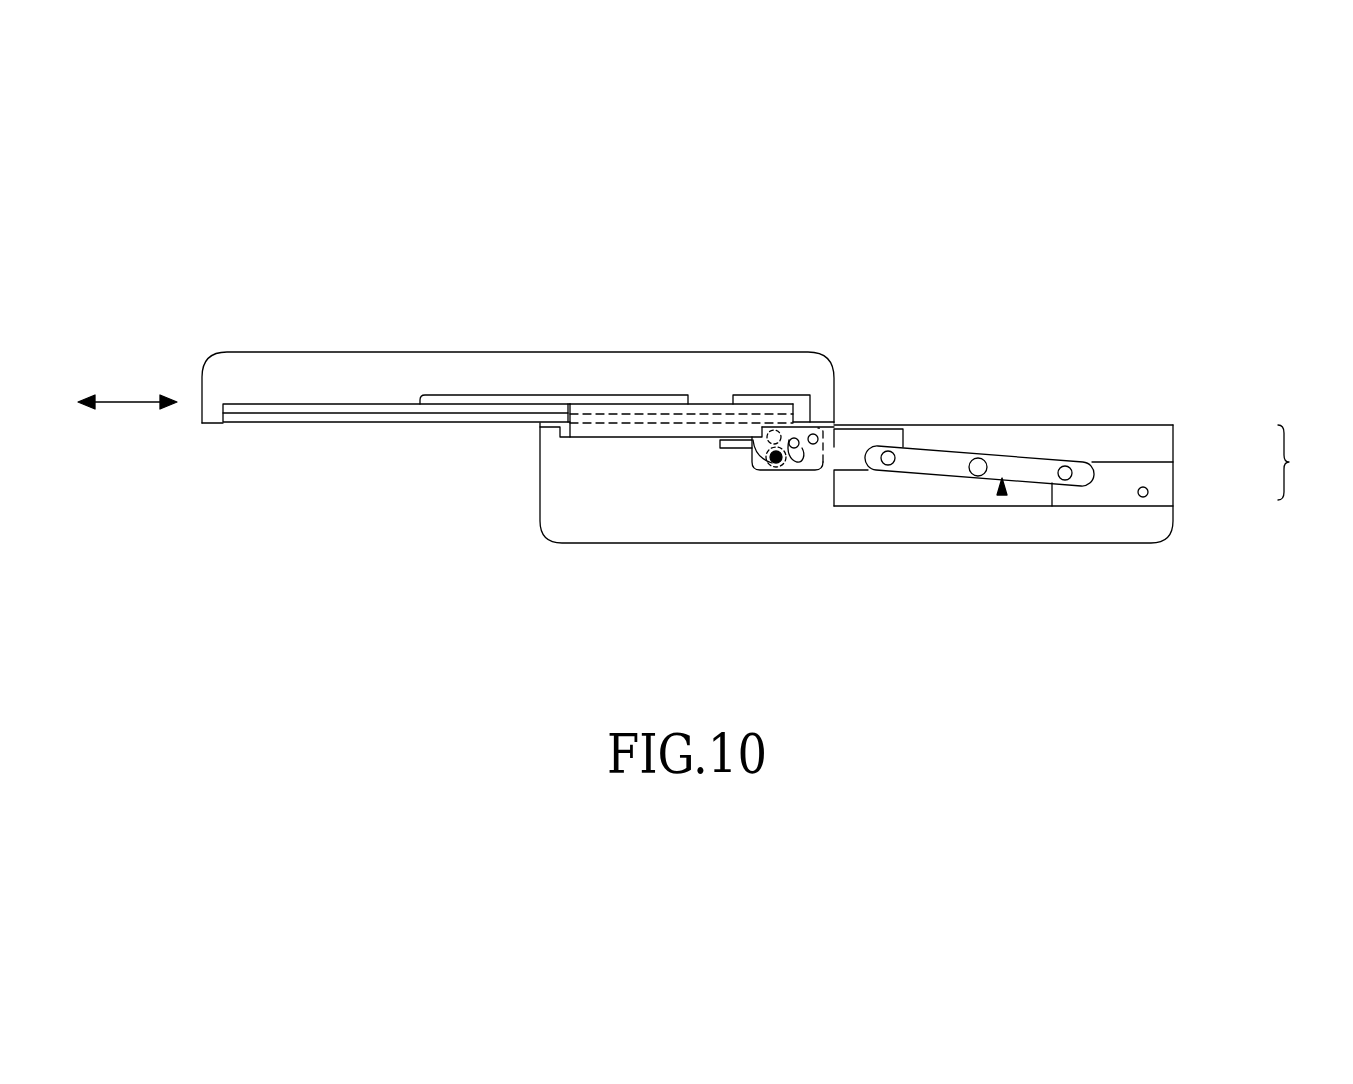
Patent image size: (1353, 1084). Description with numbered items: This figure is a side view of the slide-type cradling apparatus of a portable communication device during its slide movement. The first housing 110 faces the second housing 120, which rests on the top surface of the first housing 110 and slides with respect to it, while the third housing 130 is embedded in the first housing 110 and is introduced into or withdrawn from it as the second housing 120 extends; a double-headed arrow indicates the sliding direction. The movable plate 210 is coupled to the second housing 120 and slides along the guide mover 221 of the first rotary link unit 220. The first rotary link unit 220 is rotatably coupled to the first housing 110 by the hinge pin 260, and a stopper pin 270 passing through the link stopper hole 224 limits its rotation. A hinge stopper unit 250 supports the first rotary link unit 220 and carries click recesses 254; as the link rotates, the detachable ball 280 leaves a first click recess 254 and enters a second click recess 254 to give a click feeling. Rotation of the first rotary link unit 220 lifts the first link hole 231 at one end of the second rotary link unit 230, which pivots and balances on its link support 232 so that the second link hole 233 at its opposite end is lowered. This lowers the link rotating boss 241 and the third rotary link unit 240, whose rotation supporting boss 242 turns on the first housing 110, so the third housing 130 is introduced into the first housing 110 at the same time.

The first housing 110 is at (540, 477).
The second housing 120 is at (285, 352).
The third housing 130 is at (1064, 425).
The movable plate 210 is at (363, 406).
The first rotary link unit 220 is at (655, 405).
The guide mover 221 is at (633, 430).
The link stopper hole 224 is at (798, 463).
The second rotary link unit 230 is at (1002, 495).
The first link hole 231 is at (877, 468).
The link support 232 is at (978, 458).
The second link hole 233 is at (1070, 480).
The third rotary link unit 240 is at (1303, 462).
The link rotating boss 241 is at (1082, 462).
The rotation supporting boss 242 is at (1149, 491).
The hinge stopper unit 250 is at (757, 466).
The click recess 254 is at (770, 432).
The hinge pin 260 is at (817, 434).
The stopper pin 270 is at (789, 437).
The detachable ball 280 is at (776, 463).